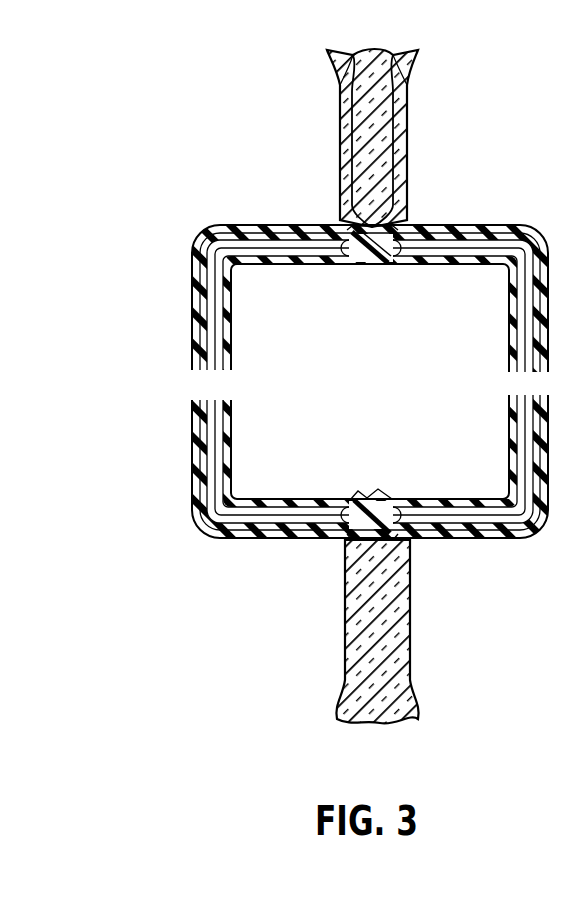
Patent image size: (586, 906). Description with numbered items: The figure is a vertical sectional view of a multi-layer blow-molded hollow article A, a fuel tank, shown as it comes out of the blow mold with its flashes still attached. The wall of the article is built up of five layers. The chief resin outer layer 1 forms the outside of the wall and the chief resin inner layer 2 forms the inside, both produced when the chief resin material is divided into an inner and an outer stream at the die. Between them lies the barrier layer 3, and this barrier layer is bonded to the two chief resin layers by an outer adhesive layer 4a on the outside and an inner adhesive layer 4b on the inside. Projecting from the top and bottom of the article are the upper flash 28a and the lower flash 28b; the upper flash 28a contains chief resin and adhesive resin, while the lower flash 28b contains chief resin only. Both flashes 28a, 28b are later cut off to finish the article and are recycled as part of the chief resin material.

The hollow article A is at (180, 344).
The chief resin outer layer 1 is at (192, 290).
The chief resin inner layer 2 is at (235, 423).
The barrier layer 3 is at (495, 233).
The outer adhesive layer 4a is at (205, 528).
The inner adhesive layer 4b is at (247, 528).
The upper flash 28a is at (330, 113).
The lower flash 28b is at (428, 630).